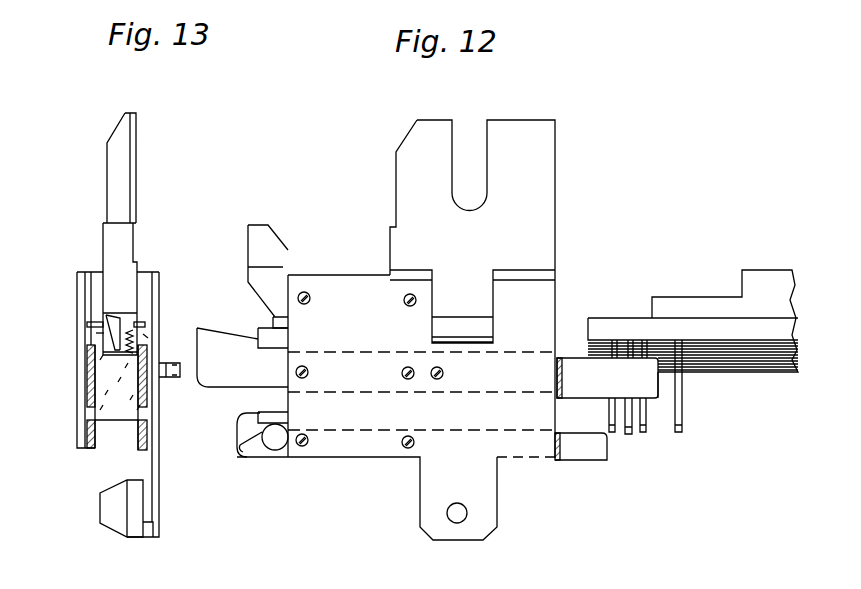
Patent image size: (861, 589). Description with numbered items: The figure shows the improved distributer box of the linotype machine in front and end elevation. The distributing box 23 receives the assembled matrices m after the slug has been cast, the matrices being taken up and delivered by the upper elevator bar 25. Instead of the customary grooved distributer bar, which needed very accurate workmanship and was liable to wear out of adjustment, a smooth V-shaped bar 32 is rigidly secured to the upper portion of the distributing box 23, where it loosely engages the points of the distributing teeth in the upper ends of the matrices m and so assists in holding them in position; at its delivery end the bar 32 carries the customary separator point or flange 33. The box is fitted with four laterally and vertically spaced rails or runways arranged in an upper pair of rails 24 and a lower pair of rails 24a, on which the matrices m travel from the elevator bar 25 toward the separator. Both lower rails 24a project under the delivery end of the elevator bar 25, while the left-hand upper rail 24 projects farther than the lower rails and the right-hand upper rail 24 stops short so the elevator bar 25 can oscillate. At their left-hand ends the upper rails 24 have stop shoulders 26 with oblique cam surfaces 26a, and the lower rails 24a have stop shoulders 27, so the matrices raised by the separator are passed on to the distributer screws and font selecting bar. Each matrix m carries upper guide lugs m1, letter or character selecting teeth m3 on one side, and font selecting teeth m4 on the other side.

In FIG. 12, the distributing box 23 is at (472, 289).
In FIG. 13, the upper rails 24 is at (87, 360).
In FIG. 12, the upper rails 24 is at (588, 286).
In FIG. 13, the lower rails 24a is at (137, 458).
In FIG. 12, the lower rails 24a is at (582, 447).
In FIG. 12, the elevator bar 25 is at (752, 363).
In FIG. 12, the stop shoulders 26 is at (252, 346).
In FIG. 12, the oblique cam surfaces 26a is at (237, 319).
In FIG. 12, the stop shoulders 27 is at (248, 417).
In FIG. 13, the smooth V-shaped bar 32 is at (110, 318).
In FIG. 13, the separator point or flange 33 is at (130, 333).
In FIG. 12, the matrices m is at (647, 405).
In FIG. 13, the upper guide lugs m1 is at (147, 335).
In FIG. 13, the letter or character selecting teeth m3 is at (110, 336).
In FIG. 13, the font selecting teeth m4 is at (97, 335).